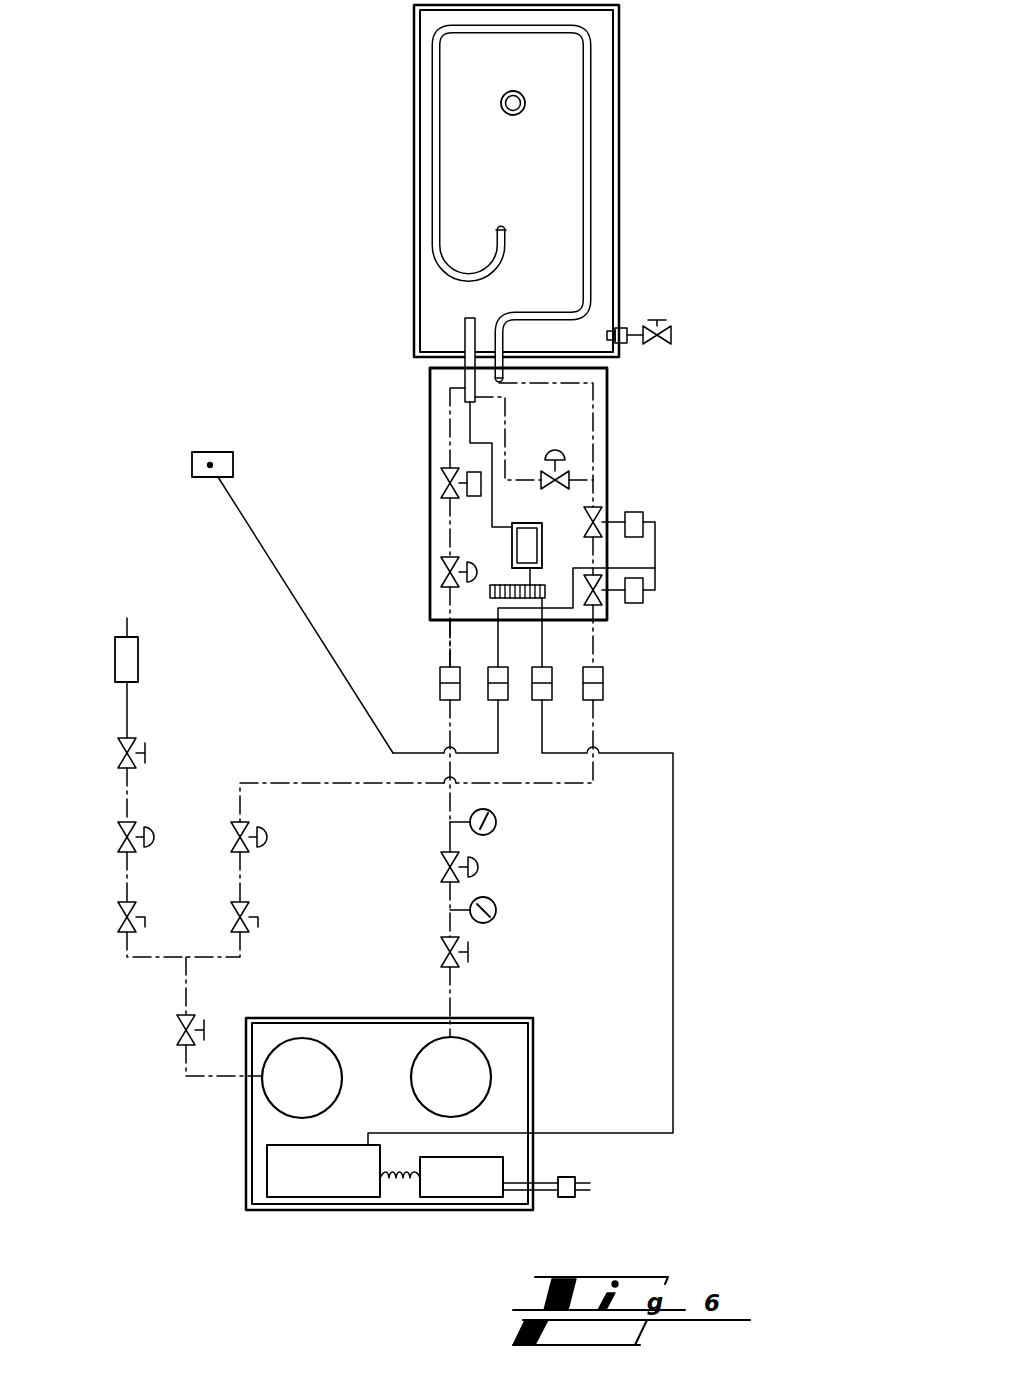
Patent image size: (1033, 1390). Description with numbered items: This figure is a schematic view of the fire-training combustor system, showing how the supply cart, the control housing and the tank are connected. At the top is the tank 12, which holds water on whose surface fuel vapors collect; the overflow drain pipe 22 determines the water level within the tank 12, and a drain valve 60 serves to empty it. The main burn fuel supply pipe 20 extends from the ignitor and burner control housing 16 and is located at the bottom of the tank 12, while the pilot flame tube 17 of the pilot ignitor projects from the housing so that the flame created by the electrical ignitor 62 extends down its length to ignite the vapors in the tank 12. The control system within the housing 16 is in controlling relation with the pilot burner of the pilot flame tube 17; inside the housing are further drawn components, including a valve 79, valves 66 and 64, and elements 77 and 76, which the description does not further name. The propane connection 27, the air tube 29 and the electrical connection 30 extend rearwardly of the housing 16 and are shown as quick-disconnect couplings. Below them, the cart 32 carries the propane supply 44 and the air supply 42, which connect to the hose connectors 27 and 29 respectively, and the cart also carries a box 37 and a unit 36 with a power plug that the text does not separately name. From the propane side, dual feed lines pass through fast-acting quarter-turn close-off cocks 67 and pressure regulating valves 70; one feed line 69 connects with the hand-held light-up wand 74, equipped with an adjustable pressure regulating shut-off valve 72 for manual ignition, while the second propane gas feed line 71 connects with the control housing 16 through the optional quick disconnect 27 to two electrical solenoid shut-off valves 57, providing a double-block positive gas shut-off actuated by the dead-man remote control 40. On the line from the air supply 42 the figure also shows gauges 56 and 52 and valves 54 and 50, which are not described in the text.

The tank 12 is at (620, 70).
The overflow drain pipe 22 is at (523, 113).
The main burn fuel supply pipe 20 is at (590, 217).
The pilot flame tube 17 is at (465, 335).
The drain valve 60 is at (670, 342).
The ignitor and burner control housing 16 is at (760, 438).
The electrical ignitor 62 is at (470, 418).
The valve 79 is at (555, 450).
The valve 66 is at (440, 483).
The valve 64 is at (441, 565).
The heater 77 is at (538, 525).
The heating element 76 is at (543, 598).
The electrical solenoid shut-off valves 57 is at (630, 512).
The propane connection 27 is at (603, 678).
The air tube 29 is at (449, 633).
The electrical connection 30 is at (552, 690).
The second propane gas feed line 71 is at (360, 783).
The remote control 40 is at (205, 452).
The hand-held light-up wand 74 is at (138, 653).
The adjustable pressure regulating shut off valve 72 is at (145, 750).
The feed line 69 is at (127, 808).
The pressure regulating valves 70 is at (230, 830).
The quarter turn close off cocks 67 is at (233, 917).
The pressure gauge 56 is at (497, 828).
The valve 54 is at (478, 866).
The pressure gauge 52 is at (497, 912).
The valve 50 is at (470, 947).
The cart 32 is at (155, 1140).
The air supply 42 is at (289, 1088).
The propane supply 44 is at (438, 1088).
The controller 37 is at (309, 1181).
The power supply 36 is at (520, 1163).